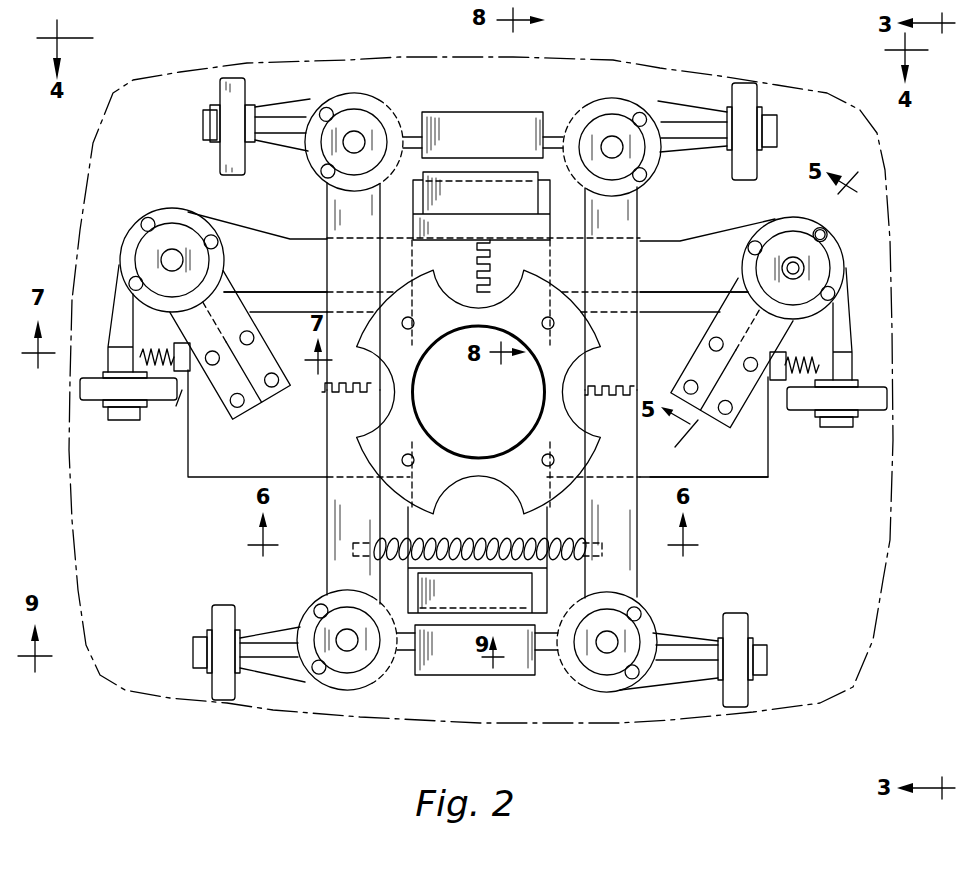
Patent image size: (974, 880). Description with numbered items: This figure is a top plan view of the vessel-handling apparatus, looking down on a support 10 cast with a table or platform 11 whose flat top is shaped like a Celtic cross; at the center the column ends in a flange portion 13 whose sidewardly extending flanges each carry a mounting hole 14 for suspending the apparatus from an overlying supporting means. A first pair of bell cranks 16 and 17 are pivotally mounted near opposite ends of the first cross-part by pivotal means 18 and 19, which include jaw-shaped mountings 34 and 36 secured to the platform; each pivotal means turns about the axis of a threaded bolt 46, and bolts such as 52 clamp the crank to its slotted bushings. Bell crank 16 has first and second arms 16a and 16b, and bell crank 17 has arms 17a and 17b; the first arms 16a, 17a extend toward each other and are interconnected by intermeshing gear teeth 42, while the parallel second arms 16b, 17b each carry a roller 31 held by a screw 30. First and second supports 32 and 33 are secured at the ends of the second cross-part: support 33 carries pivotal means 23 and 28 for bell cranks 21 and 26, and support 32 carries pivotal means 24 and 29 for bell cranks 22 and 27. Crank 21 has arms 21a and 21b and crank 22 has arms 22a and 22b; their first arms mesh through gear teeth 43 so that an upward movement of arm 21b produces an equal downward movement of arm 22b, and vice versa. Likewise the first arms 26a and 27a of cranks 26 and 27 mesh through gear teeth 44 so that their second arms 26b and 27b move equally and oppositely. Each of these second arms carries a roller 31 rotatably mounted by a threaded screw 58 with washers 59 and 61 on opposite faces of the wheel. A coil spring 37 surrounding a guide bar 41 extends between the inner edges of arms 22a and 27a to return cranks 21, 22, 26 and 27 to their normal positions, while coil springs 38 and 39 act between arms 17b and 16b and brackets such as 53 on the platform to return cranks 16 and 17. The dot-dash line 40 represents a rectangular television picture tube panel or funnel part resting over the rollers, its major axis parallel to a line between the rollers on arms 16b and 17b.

The support 10 is at (748, 486).
The platform 11 is at (766, 458).
The flange portion 13 is at (434, 456).
The mounting hole 14 is at (414, 322).
The bell crank 16 is at (850, 263).
The first arm of bell crank 16 16a is at (677, 250).
The second arm of bell crank 16 16b is at (847, 331).
The bell crank 17 is at (178, 200).
The first arm of bell crank 17 17a is at (272, 238).
The second arm of bell crank 17 17b is at (118, 311).
The pivotal means 18 is at (820, 256).
The pivotal means 19 is at (135, 240).
The bell crank 21 is at (345, 91).
The first arm of bell crank 21 21a is at (340, 211).
The second arm of bell crank 21 21b is at (272, 116).
The bell crank 22 is at (314, 596).
The first arm of bell crank 22 22a is at (338, 515).
The second arm of bell crank 22 22b is at (280, 668).
The pivotal means 23 is at (365, 118).
The pivotal means 24 is at (356, 676).
The bell crank 26 is at (600, 94).
The first arm of bell crank 26 26a is at (634, 206).
The second arm of bell crank 26 26b is at (683, 116).
The bell crank 27 is at (642, 603).
The first arm of bell crank 27 27a is at (627, 509).
The second arm of bell crank 27 27b is at (695, 645).
The pivotal means 28 is at (616, 122).
The pivotal means 29 is at (607, 672).
The screw 30 is at (125, 421).
The roller 31 is at (236, 78).
The first support 32 is at (410, 672).
The second support 33 is at (413, 114).
The jaw-shaped mounting 34 is at (218, 395).
The jaw-shaped mounting 36 is at (740, 409).
The coil spring 37 is at (439, 540).
The coil spring 38 is at (158, 348).
The coil spring 39 is at (805, 352).
The vessel 40 is at (893, 552).
The guide bar 41 is at (492, 540).
The gear teeth 42 is at (492, 255).
The gear teeth 43 is at (369, 383).
The gear teeth 44 is at (626, 386).
The threaded bolt 46 is at (788, 246).
The bolt 52 is at (826, 233).
The bracket 53 is at (172, 406).
The threaded screw 58 is at (192, 648).
The washer 59 is at (207, 632).
The washer 61 is at (243, 633).